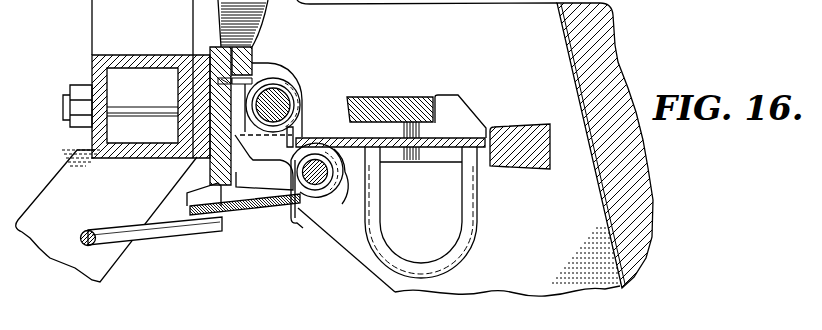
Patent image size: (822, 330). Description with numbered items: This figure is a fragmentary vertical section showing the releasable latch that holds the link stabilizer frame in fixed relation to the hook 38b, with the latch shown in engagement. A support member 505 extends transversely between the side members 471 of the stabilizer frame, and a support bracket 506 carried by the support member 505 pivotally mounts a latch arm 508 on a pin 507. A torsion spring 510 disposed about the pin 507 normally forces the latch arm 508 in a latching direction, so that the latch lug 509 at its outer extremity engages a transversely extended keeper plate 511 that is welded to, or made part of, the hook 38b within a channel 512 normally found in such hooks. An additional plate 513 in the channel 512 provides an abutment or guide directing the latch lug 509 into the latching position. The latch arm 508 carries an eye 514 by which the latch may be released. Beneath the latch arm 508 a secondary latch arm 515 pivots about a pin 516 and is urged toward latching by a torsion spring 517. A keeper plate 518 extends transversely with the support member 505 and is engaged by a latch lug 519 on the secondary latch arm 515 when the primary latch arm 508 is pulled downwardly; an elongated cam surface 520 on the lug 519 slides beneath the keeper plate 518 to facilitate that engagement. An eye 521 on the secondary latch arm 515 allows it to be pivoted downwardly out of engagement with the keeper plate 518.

The hook 38b is at (605, 53).
The side members 471 is at (67, 168).
The support member 505 is at (92, 65).
The support bracket 506 is at (247, 50).
The pin 507 is at (322, 127).
The latch arm 508 is at (322, 127).
The latch lug 509 is at (462, 118).
The torsion spring 510 is at (276, 100).
The keeper plate 511 is at (423, 95).
The channel 512 is at (547, 283).
The additional plate 513 is at (532, 162).
The eye 514 is at (387, 253).
The latch arm 515 is at (265, 208).
The pin 516 is at (320, 182).
The torsion spring 517 is at (297, 218).
The keeper plate 518 is at (210, 171).
The latch lug 519 is at (236, 207).
The cam surface 520 is at (187, 188).
The eye 521 is at (97, 243).